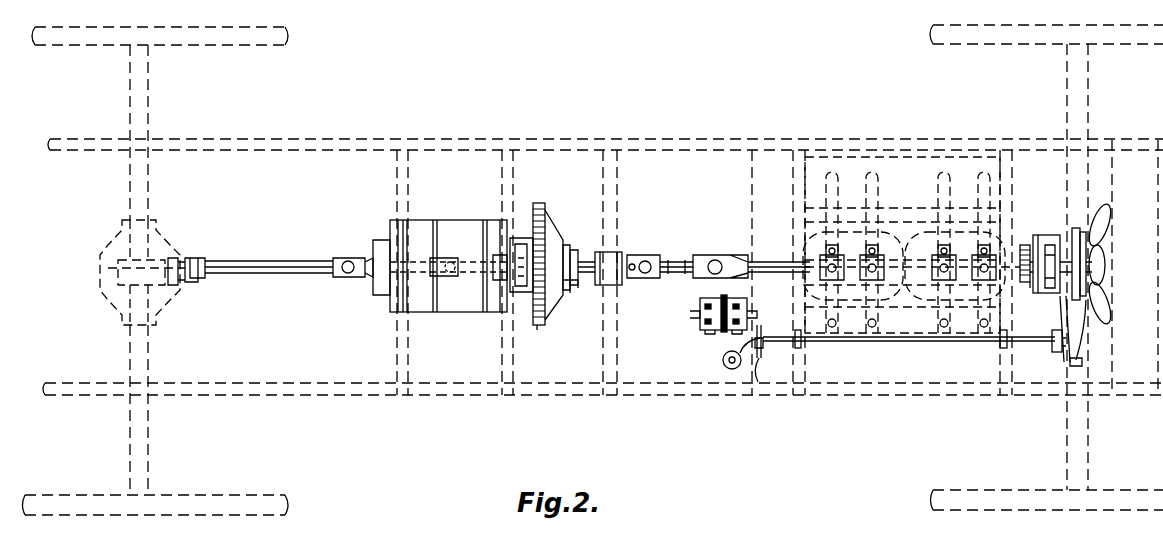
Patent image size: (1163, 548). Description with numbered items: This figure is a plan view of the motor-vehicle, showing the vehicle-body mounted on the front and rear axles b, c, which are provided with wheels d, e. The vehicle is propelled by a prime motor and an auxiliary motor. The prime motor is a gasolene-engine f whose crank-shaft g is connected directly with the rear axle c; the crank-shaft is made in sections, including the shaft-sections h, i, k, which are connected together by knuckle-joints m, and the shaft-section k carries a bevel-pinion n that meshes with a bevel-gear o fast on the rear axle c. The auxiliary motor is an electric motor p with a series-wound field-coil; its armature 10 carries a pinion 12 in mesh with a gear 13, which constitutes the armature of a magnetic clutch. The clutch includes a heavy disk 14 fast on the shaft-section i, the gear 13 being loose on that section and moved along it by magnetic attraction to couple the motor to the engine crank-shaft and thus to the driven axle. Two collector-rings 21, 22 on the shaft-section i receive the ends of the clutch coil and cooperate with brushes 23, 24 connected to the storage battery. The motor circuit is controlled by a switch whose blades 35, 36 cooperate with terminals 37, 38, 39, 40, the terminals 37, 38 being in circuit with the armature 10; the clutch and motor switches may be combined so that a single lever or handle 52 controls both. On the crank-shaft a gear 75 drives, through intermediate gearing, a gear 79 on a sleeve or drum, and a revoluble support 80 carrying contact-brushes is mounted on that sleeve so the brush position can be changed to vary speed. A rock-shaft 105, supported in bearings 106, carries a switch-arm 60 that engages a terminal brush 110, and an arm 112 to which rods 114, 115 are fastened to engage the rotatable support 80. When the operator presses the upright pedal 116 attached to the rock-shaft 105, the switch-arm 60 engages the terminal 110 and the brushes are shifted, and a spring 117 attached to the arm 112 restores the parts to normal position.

The bevel-gear o is at (104, 262).
The bevel-pinion n is at (178, 286).
The shaft-section k is at (273, 261).
The knuckle-joints m is at (348, 258).
The electric motor p is at (458, 220).
The armature 10 is at (523, 238).
The gear 13 is at (540, 203).
The disk 14 is at (540, 325).
The pinion 12 is at (556, 258).
The brush 23 is at (568, 257).
The brush 24 is at (576, 250).
The collector-ring 21 is at (564, 294).
The collector-ring 22 is at (573, 286).
The shaft-section i is at (590, 280).
The shaft-section h is at (682, 261).
The crank-shaft g is at (764, 262).
The gasolene-engine f is at (805, 214).
The blade 35 is at (708, 331).
The blade 36 is at (733, 296).
The terminal 37 is at (757, 314).
The terminal 38 is at (740, 304).
The terminal 39 is at (702, 322).
The terminal 40 is at (707, 304).
The lever or handle 52 is at (706, 316).
The pedal 116 is at (736, 367).
The switch-arm 60 is at (763, 350).
The terminal brush 110 is at (760, 383).
The rock-shaft 105 is at (846, 342).
The bearings 106 is at (800, 346).
The gear 75 is at (1024, 245).
The support 80 is at (1055, 235).
The gear 79 is at (1030, 288).
The rod 114 is at (1089, 318).
The spring 117 is at (1058, 306).
The arm 112 is at (1054, 352).
The rod 115 is at (1084, 356).
The front axle b is at (1067, 432).
The rear axle c is at (163, 356).
The wheels d is at (933, 470).
The wheels e is at (291, 482).